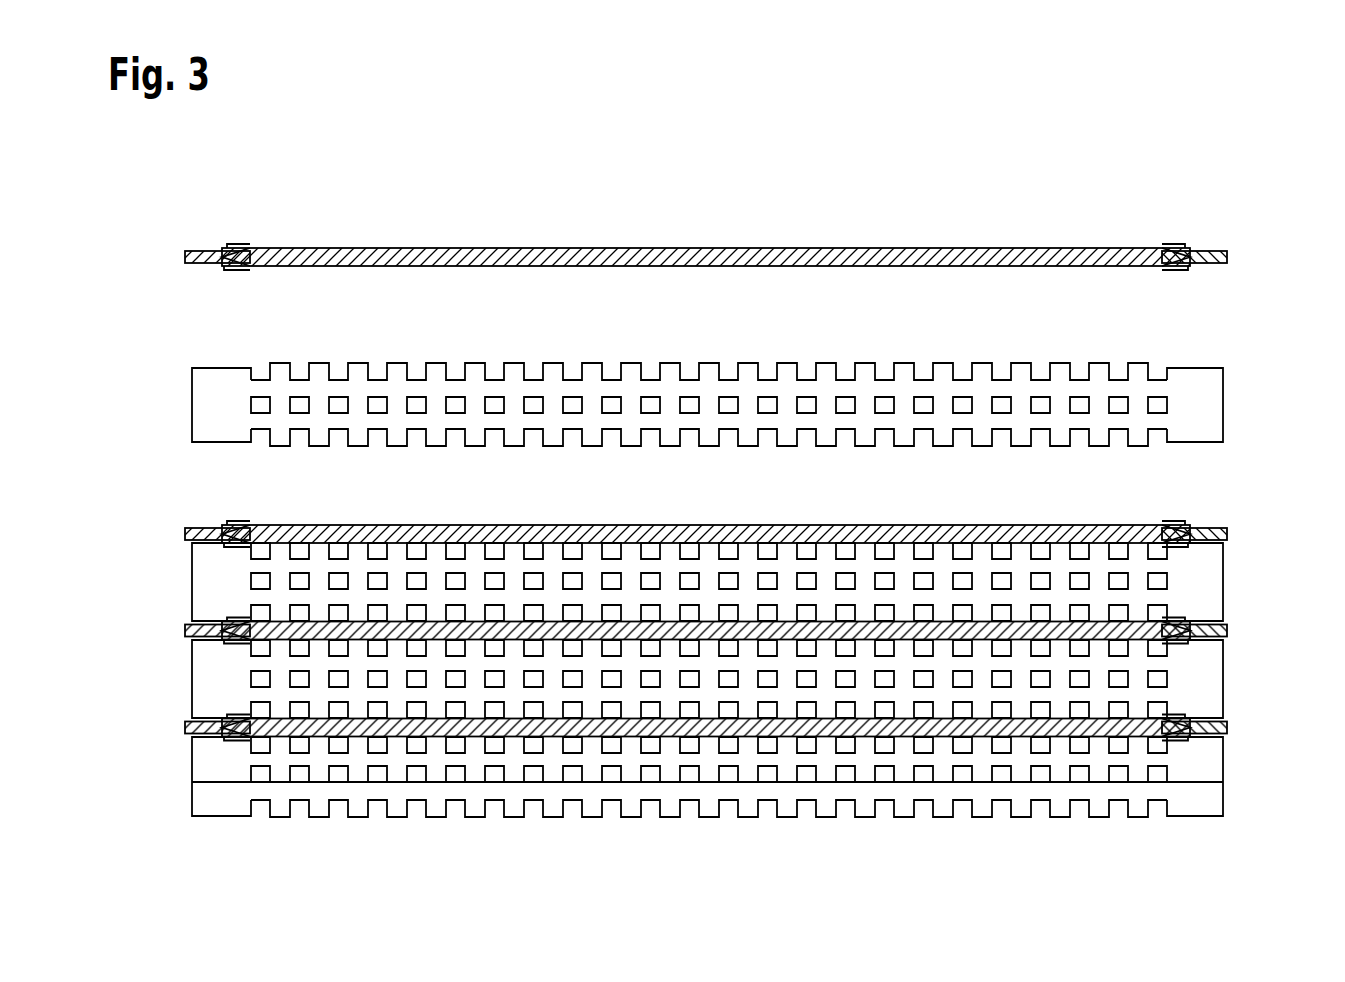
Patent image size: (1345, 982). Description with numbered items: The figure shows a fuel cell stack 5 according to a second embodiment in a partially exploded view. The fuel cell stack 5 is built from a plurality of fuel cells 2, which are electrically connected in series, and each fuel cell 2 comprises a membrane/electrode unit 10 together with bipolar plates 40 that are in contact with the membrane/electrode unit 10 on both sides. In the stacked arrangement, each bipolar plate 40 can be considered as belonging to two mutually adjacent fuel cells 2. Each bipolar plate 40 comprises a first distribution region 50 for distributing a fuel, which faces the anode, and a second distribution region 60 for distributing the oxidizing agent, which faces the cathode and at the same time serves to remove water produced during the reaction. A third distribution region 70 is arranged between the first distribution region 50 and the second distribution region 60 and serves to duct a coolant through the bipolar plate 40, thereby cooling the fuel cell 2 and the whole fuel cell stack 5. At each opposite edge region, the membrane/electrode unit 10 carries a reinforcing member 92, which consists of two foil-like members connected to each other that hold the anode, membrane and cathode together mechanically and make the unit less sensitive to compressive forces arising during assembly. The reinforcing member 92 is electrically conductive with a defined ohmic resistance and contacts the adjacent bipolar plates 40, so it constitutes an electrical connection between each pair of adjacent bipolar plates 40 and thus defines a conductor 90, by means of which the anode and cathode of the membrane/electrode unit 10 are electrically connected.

The fuel cell 2 is at (1252, 728).
The fuel cell stack 5 is at (1041, 180).
The membrane/electrode unit 10 is at (661, 256).
The bipolar plate 40 is at (1202, 406).
The first distribution region 50 is at (1153, 548).
The second distribution region 60 is at (1153, 610).
The third distribution region 70 is at (1153, 580).
The conductor 90 is at (205, 250).
The reinforcing member 92 is at (1211, 250).